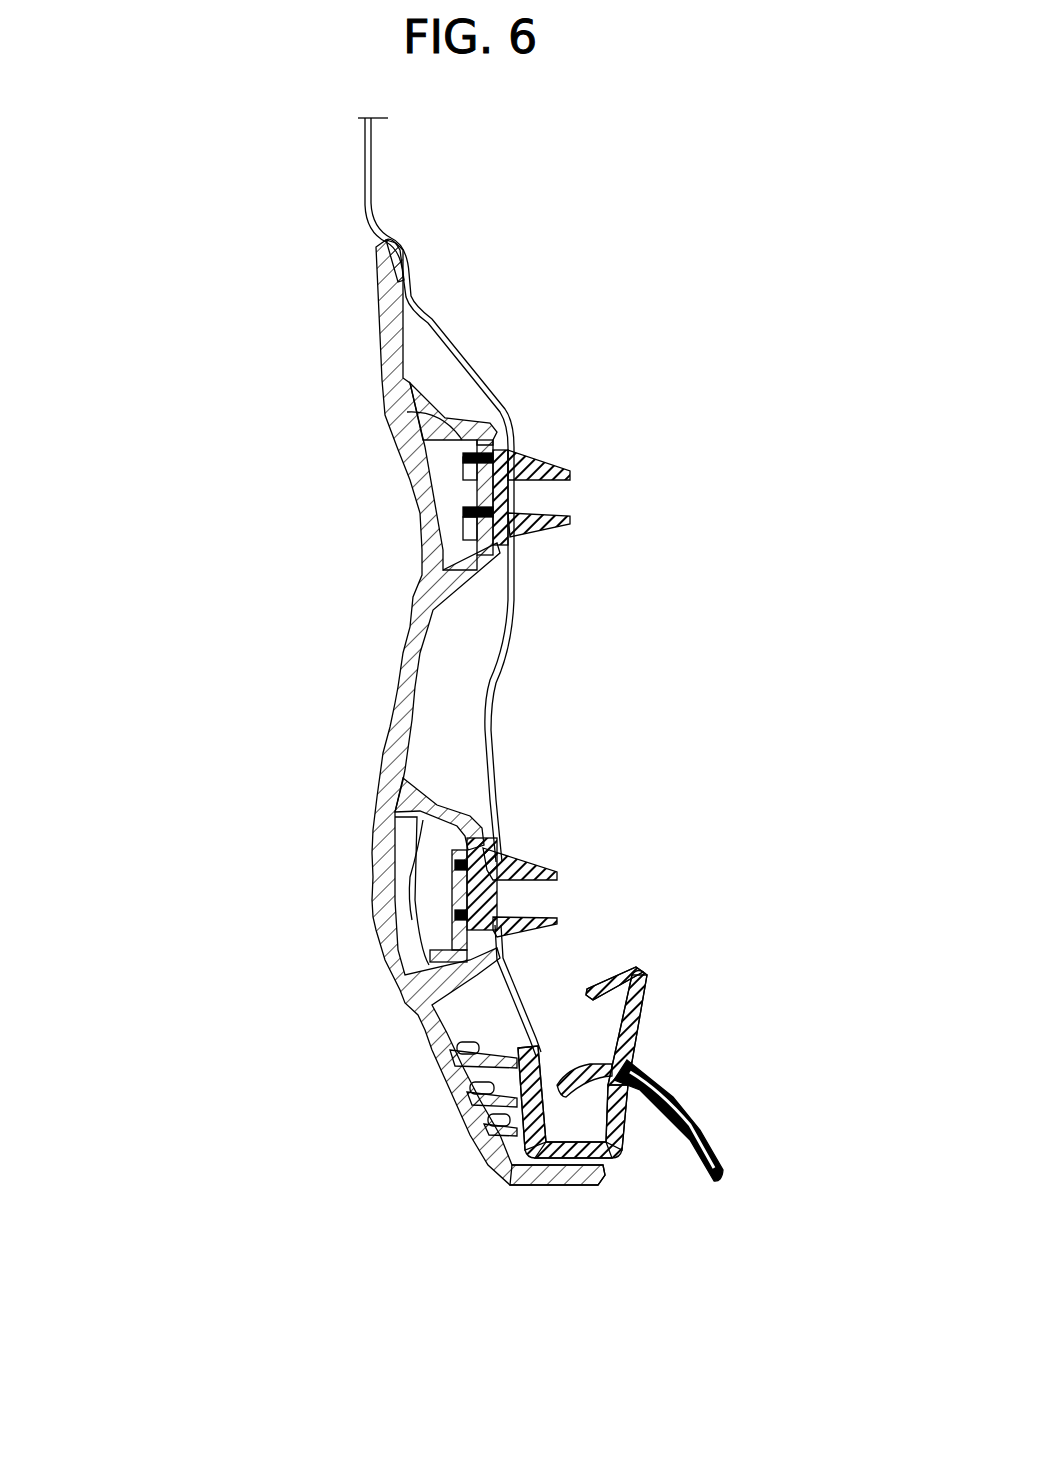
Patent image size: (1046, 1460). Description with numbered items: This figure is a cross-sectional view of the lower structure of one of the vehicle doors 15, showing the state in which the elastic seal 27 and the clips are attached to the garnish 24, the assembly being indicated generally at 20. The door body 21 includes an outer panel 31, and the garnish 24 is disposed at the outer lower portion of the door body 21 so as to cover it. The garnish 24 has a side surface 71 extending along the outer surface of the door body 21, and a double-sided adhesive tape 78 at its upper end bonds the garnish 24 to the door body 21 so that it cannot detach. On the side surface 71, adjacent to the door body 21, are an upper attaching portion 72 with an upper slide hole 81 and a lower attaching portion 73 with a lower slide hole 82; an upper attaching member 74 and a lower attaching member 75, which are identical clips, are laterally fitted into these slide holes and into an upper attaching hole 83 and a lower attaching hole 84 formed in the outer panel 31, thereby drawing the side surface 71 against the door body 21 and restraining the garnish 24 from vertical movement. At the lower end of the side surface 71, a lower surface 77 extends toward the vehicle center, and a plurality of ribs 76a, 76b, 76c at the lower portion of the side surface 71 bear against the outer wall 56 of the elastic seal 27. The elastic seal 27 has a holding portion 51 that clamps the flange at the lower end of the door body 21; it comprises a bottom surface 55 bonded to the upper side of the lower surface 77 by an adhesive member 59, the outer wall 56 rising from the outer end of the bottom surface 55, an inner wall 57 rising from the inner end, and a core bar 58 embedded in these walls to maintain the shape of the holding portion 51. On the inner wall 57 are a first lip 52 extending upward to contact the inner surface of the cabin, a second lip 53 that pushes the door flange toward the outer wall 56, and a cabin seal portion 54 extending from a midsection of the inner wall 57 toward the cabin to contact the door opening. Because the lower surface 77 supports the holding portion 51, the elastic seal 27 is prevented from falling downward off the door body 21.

The vehicle door 15 is at (340, 440).
The door trim assembly 20 is at (262, 283).
The door body 21 is at (482, 703).
The garnish 24 is at (373, 800).
The elastic seal 27 is at (603, 977).
The outer panel 31 is at (487, 670).
The holding portion 51 is at (597, 1119).
The first lip 52 is at (615, 975).
The second lip 53 is at (592, 1058).
The cabin seal portion 54 is at (692, 1100).
The bottom surface 55 is at (530, 1175).
The outer wall 56 is at (480, 1180).
The inner wall 57 is at (658, 1118).
The core bar 58 is at (620, 1108).
The adhesive member 59 is at (572, 1180).
The side surface 71 is at (393, 742).
The upper attaching portion 72 is at (468, 418).
The lower attaching portion 73 is at (465, 812).
The upper attaching member 74 is at (537, 463).
The lower attaching member 75 is at (548, 865).
The rib 76a is at (433, 1057).
The rib 76b is at (460, 1097).
The rib 76c is at (477, 1130).
The lower surface 77 is at (490, 1180).
The double-sided adhesive tape 78 is at (402, 252).
The upper slide hole 81 is at (469, 416).
The lower slide hole 82 is at (445, 815).
The upper attaching hole 83 is at (517, 503).
The lower attaching hole 84 is at (520, 912).